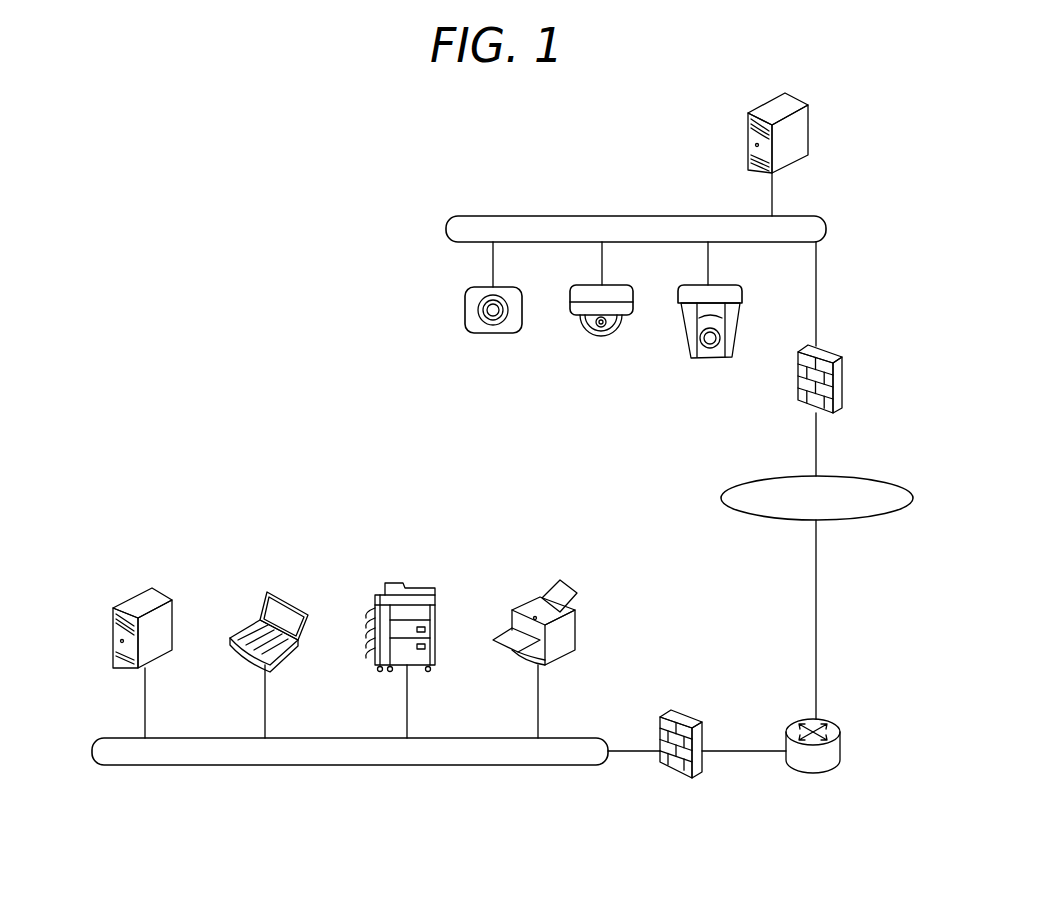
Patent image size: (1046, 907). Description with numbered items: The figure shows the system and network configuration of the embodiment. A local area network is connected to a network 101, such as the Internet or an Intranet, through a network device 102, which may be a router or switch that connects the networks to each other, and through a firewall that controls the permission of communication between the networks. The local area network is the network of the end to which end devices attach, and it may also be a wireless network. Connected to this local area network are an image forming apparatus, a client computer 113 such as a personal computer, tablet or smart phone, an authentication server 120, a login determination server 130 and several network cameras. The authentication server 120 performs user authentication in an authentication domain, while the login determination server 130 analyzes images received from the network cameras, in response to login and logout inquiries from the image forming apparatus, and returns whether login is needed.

The network 101 is at (870, 475).
The network device 102 is at (833, 722).
The client computer 113 is at (293, 602).
The authentication server 120 is at (162, 587).
The login determination server 130 is at (797, 93).